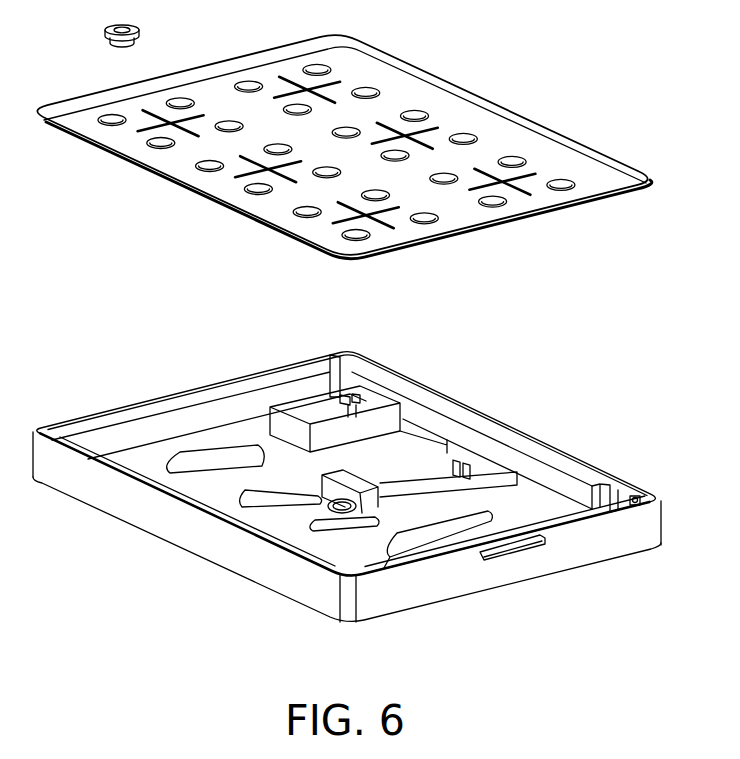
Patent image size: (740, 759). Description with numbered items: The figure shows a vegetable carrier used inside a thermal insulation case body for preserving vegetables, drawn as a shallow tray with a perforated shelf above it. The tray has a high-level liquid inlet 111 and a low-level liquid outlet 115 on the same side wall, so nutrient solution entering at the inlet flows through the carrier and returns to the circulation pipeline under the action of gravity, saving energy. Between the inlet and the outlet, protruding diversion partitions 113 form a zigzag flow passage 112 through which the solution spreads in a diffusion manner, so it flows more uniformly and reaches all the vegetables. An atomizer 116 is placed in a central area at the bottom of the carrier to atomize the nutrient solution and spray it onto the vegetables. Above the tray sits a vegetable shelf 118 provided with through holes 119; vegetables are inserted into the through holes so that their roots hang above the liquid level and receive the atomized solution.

The high-level liquid inlet 111 is at (633, 493).
The zigzag flow passage 112 is at (393, 525).
The diversion partitions 113 is at (437, 525).
The low-level liquid outlet 115 is at (368, 404).
The atomizer 116 is at (348, 503).
The vegetable shelf 118 is at (178, 170).
The through holes 119 is at (258, 193).